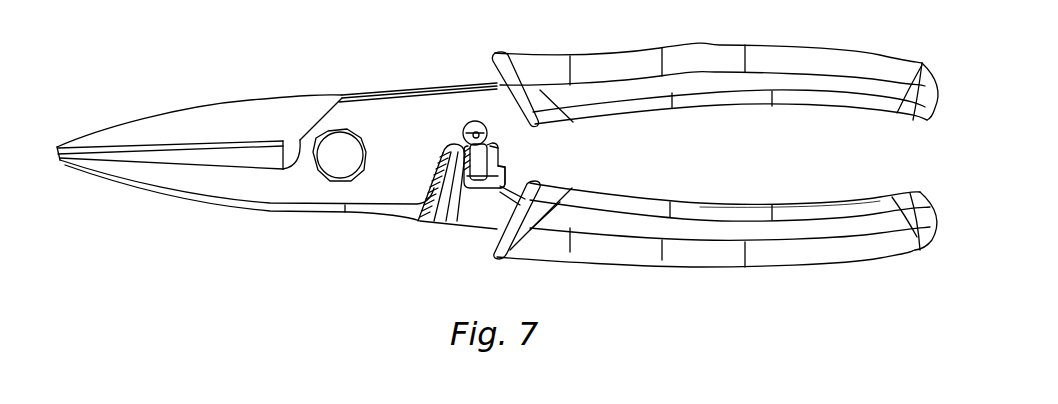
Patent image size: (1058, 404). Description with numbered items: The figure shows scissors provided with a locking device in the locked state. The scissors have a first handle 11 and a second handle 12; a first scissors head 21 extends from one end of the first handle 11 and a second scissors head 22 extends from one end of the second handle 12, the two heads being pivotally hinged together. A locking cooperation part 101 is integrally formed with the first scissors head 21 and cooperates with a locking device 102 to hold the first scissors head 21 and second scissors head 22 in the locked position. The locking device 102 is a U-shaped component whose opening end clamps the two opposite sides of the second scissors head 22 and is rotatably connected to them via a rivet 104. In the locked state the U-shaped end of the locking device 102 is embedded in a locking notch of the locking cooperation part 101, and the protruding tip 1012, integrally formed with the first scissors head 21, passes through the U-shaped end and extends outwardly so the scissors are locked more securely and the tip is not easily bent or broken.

The first scissors head 21 is at (217, 118).
The second scissors head 22 is at (248, 190).
The second handle 12 is at (687, 52).
The first handle 11 is at (660, 228).
The locking cooperation part 101 is at (487, 185).
The locking device 102 is at (482, 162).
The rivet 104 is at (475, 130).
The protruding tip 1012 is at (497, 171).